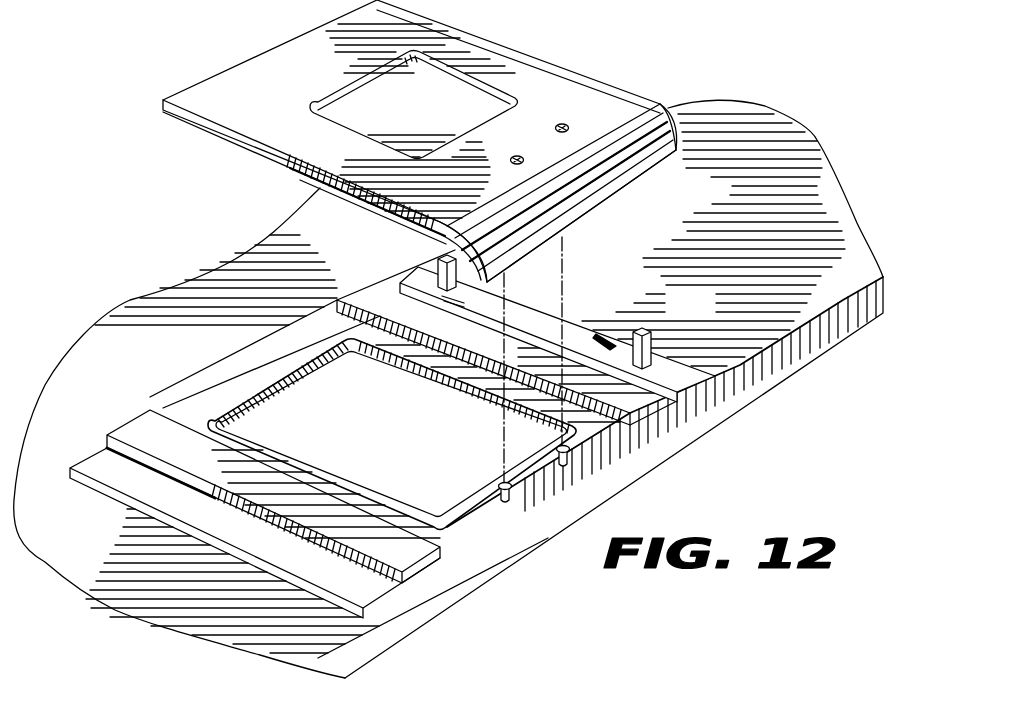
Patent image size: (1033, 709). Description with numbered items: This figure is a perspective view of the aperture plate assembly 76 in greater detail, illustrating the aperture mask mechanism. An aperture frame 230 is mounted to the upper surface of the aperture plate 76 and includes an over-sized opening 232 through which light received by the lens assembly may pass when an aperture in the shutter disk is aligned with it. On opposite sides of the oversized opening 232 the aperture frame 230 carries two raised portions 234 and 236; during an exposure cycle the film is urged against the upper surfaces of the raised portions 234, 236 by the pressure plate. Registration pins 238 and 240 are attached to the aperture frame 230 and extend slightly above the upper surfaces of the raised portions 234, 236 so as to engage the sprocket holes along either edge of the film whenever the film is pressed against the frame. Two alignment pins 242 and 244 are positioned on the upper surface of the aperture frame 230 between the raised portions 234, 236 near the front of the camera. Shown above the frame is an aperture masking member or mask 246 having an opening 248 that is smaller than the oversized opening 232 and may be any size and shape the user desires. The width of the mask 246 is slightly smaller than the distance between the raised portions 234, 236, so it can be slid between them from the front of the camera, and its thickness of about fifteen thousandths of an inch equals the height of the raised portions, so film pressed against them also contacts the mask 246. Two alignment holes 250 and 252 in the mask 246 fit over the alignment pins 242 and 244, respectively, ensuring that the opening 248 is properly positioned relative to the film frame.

The aperture plate 76 is at (848, 220).
The aperture frame 230 is at (237, 378).
The over-sized opening 232 is at (376, 402).
The raised portion 234 is at (128, 432).
The raised portion 236 is at (373, 290).
The registration pin 238 is at (645, 330).
The registration pin 240 is at (446, 258).
The alignment pin 242 is at (500, 485).
The alignment pin 244 is at (558, 452).
The aperture masking member 246 is at (420, 141).
The opening 248 is at (429, 111).
The alignment hole 250 is at (528, 146).
The alignment hole 252 is at (568, 130).